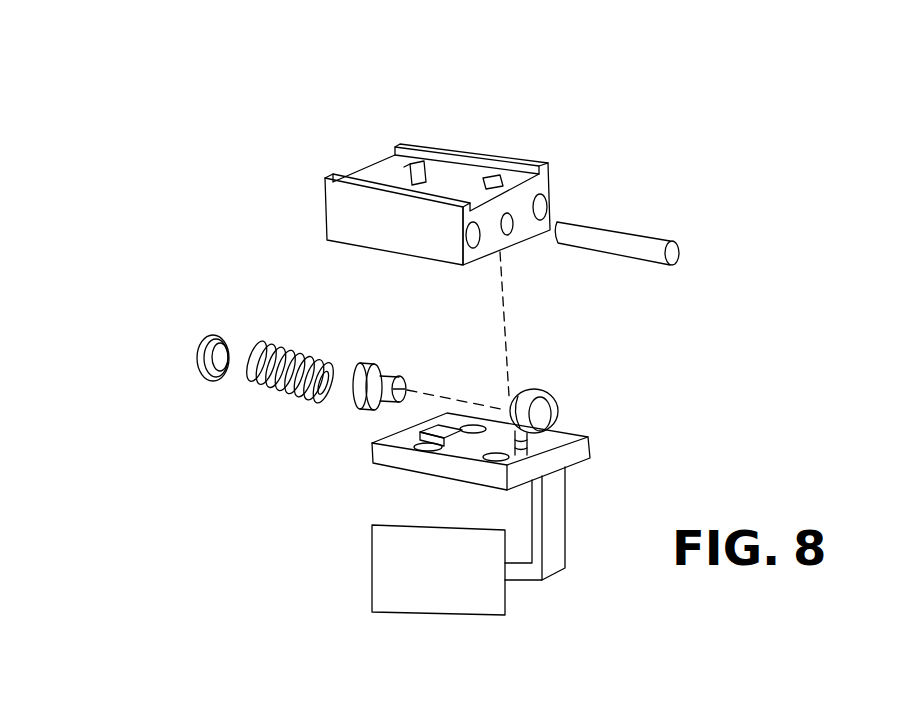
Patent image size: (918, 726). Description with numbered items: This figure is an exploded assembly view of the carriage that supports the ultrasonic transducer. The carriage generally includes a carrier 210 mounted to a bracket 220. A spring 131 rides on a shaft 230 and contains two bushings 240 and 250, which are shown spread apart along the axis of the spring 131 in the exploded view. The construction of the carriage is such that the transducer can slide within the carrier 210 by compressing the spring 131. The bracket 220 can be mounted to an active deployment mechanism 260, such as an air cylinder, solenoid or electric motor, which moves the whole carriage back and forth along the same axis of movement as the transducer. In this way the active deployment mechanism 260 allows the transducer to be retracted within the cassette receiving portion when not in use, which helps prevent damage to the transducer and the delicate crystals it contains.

The spring 131 is at (232, 382).
The carrier 210 is at (401, 138).
The bracket 220 is at (546, 392).
The shaft 230 is at (636, 223).
The bushing 240 is at (204, 325).
The bushing 250 is at (346, 407).
The active deployment mechanism 260 is at (440, 617).